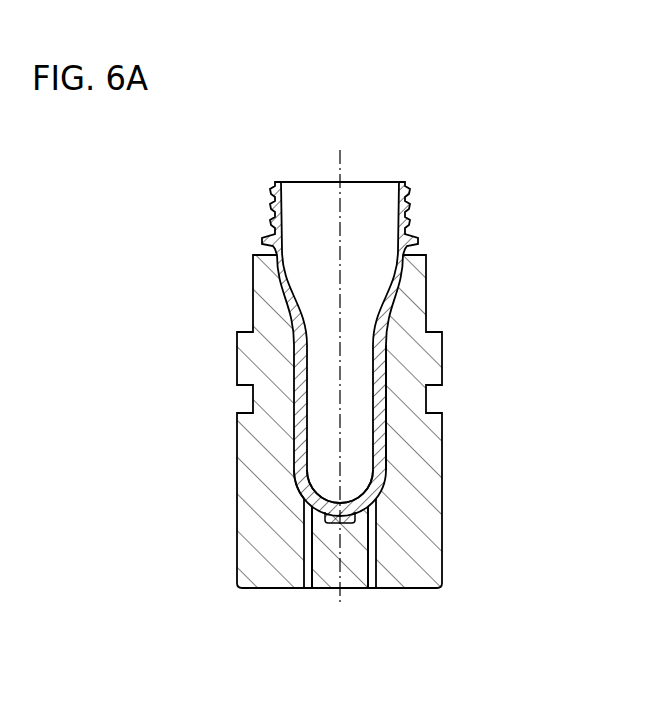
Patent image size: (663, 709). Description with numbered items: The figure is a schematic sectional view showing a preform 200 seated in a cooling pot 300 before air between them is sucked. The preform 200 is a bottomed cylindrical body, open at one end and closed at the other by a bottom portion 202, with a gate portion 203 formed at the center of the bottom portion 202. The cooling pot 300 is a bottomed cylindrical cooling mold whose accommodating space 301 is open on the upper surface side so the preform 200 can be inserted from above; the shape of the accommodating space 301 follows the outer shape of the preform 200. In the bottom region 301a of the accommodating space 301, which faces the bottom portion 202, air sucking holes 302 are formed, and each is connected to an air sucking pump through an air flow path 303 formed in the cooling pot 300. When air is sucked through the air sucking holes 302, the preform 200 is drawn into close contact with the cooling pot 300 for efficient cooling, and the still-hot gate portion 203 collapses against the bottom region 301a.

The preform 200 is at (395, 343).
The bottom portion 202 is at (368, 507).
The gate portion 203 is at (350, 518).
The cooling pot 300 is at (452, 355).
The accommodating space 301 is at (380, 435).
The bottom region 301a is at (328, 526).
The air sucking holes 302 is at (303, 502).
The air flow path 303 is at (303, 551).